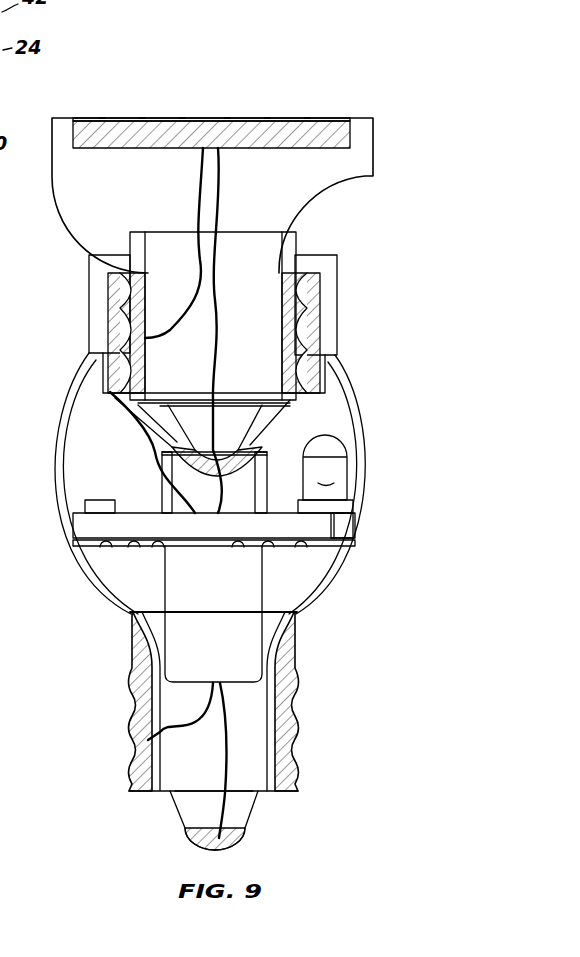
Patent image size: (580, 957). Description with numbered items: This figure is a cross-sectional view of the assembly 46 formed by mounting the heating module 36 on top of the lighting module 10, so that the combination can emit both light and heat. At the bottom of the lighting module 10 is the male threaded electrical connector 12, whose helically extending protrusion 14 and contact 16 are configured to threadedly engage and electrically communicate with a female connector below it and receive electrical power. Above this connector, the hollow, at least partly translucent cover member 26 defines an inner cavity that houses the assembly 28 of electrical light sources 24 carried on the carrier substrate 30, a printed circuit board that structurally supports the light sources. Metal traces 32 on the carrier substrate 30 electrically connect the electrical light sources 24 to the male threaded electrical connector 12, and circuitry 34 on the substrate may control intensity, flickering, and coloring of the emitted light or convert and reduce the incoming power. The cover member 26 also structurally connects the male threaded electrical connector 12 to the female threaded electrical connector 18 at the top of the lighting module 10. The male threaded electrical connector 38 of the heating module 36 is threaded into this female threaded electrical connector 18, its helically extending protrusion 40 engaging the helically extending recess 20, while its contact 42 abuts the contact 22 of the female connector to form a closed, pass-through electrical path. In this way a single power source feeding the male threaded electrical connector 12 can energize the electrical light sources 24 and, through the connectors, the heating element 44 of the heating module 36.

The lighting module 10 is at (357, 690).
The male threaded electrical connector 12 is at (112, 742).
The helically extending protrusion 14 is at (298, 768).
The contact 16 is at (228, 843).
The female threaded electrical connector 18 is at (80, 331).
The helically extending recess 20 is at (303, 309).
The contact 22 is at (203, 486).
The electrical light sources 24 is at (283, 514).
The cover member 26 is at (358, 401).
The assembly of electrical light sources 28 is at (137, 510).
The carrier substrate 30 is at (117, 528).
The metal traces 32 is at (145, 548).
The circuitry 34 is at (245, 551).
The heating module 36 is at (380, 216).
The male threaded electrical connector 38 is at (308, 290).
The helically extending protrusion 40 is at (110, 315).
The contact 42 is at (177, 432).
The heating element 44 is at (162, 135).
The assembly 46 is at (382, 91).